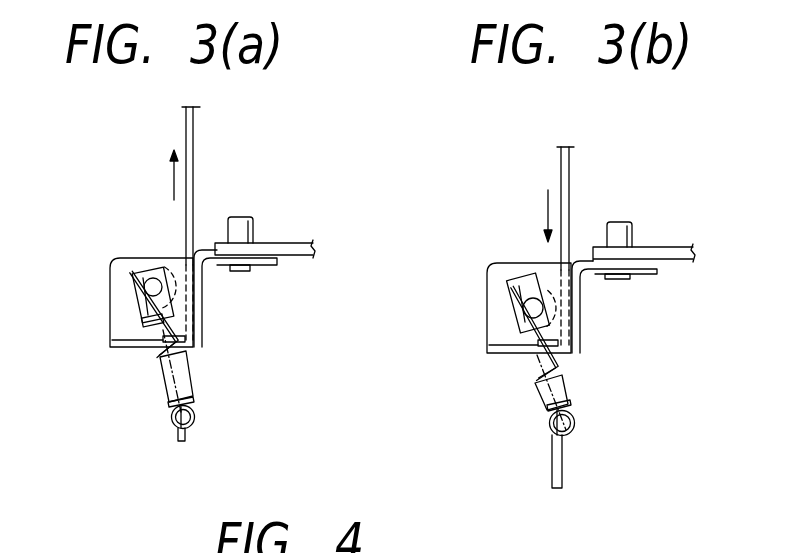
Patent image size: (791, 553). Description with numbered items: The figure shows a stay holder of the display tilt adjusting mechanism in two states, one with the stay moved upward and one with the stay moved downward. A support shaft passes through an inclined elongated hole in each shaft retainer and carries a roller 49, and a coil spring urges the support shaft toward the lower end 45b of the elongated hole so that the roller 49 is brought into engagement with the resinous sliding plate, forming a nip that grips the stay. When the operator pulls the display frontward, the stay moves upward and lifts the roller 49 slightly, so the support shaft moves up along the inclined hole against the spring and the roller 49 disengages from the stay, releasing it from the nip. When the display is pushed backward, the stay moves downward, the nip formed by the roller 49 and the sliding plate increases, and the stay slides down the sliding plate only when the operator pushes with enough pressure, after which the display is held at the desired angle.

The lower end of the elongated hole 45b is at (145, 325).
The roller 49 is at (152, 270).